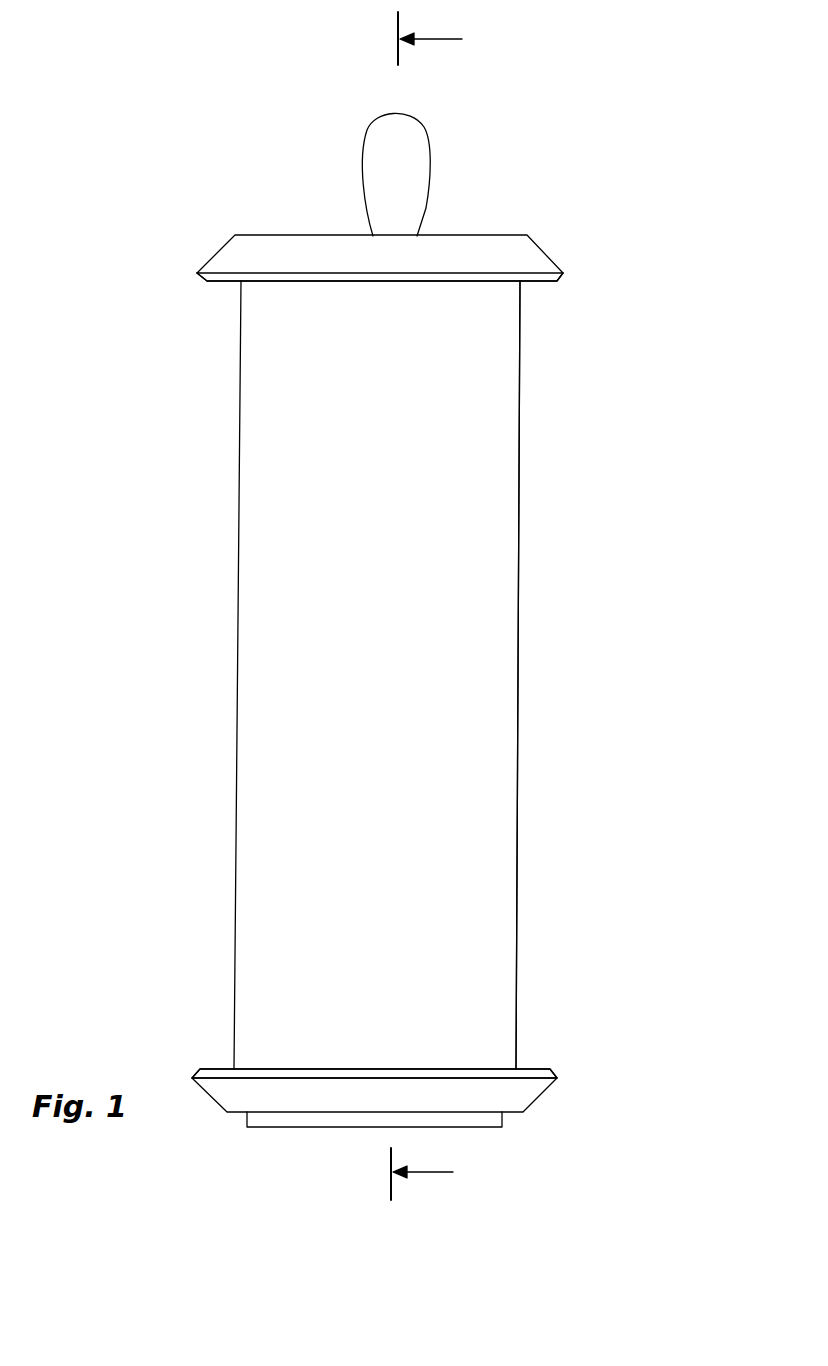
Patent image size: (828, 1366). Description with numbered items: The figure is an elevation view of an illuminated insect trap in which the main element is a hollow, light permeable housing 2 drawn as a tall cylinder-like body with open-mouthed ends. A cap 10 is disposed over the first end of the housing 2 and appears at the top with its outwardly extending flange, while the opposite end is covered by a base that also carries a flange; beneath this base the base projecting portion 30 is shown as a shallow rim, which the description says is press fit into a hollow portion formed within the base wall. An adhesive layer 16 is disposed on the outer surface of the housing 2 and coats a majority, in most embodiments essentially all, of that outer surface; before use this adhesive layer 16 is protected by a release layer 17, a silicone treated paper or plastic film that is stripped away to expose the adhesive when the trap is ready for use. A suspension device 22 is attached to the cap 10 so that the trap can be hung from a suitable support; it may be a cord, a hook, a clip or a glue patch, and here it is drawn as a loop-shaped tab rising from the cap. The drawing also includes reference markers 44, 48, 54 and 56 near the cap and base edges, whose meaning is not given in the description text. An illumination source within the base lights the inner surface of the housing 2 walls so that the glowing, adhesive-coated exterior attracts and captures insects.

The housing 2 is at (426, 610).
The cap 10 is at (579, 195).
The adhesive layer 16 is at (445, 490).
The release layer 17 is at (517, 547).
The suspension device 22 is at (535, 1105).
The base projecting portion 30 is at (482, 1127).
The top end closure 44 is at (545, 252).
The pull tab 48 is at (432, 148).
The top seam 54 is at (565, 275).
The bottom seam 56 is at (558, 1078).